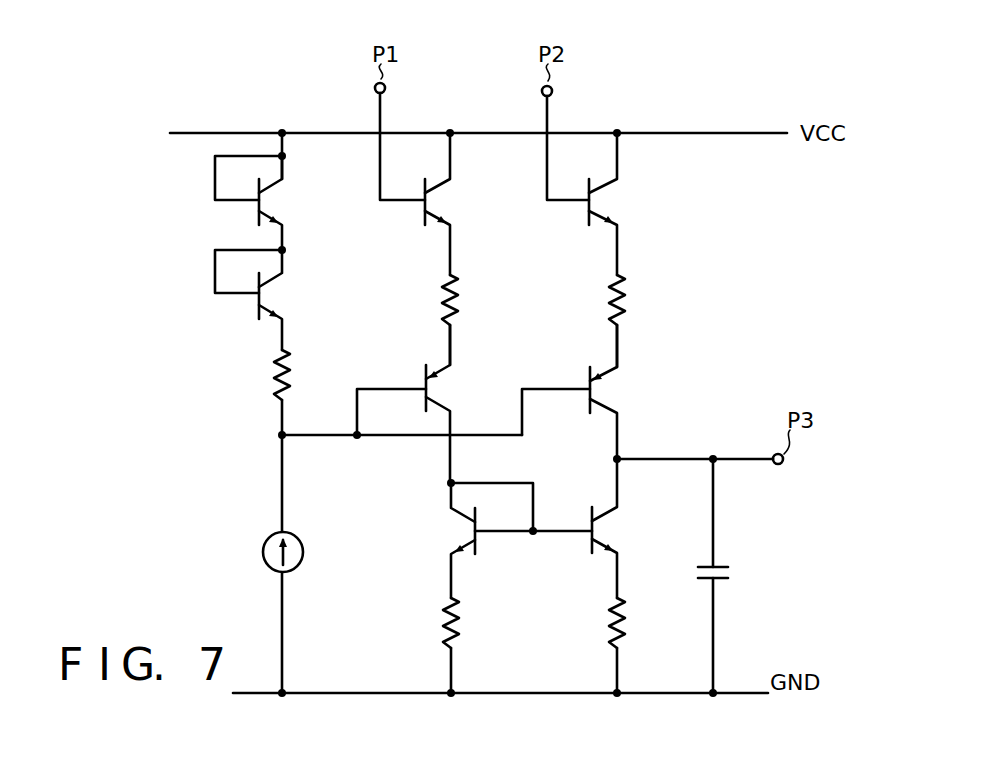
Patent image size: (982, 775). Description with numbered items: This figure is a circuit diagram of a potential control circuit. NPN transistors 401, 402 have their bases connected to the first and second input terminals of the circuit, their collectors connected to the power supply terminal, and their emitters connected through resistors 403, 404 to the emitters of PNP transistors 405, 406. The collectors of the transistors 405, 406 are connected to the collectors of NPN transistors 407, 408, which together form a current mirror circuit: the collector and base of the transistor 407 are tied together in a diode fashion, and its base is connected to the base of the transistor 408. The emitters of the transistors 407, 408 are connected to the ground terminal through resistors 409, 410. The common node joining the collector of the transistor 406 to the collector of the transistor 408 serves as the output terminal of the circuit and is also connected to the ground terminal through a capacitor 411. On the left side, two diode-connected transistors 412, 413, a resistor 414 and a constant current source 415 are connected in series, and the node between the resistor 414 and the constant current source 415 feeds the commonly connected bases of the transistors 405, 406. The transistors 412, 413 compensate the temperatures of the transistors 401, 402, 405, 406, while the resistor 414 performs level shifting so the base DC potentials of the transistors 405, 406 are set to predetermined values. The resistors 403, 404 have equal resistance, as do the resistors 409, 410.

The NPN transistor 401 is at (440, 201).
The NPN transistor 402 is at (607, 201).
The resistor 403 is at (462, 303).
The resistor 404 is at (630, 303).
The PNP transistor 405 is at (440, 388).
The PNP transistor 406 is at (610, 388).
The NPN transistor 407 is at (462, 533).
The NPN transistor 408 is at (588, 541).
The resistor 409 is at (446, 623).
The resistor 410 is at (610, 624).
The capacitor 411 is at (735, 573).
The transistor 412 is at (280, 201).
The transistor 413 is at (276, 297).
The resistor 414 is at (296, 386).
The constant current source 415 is at (300, 541).